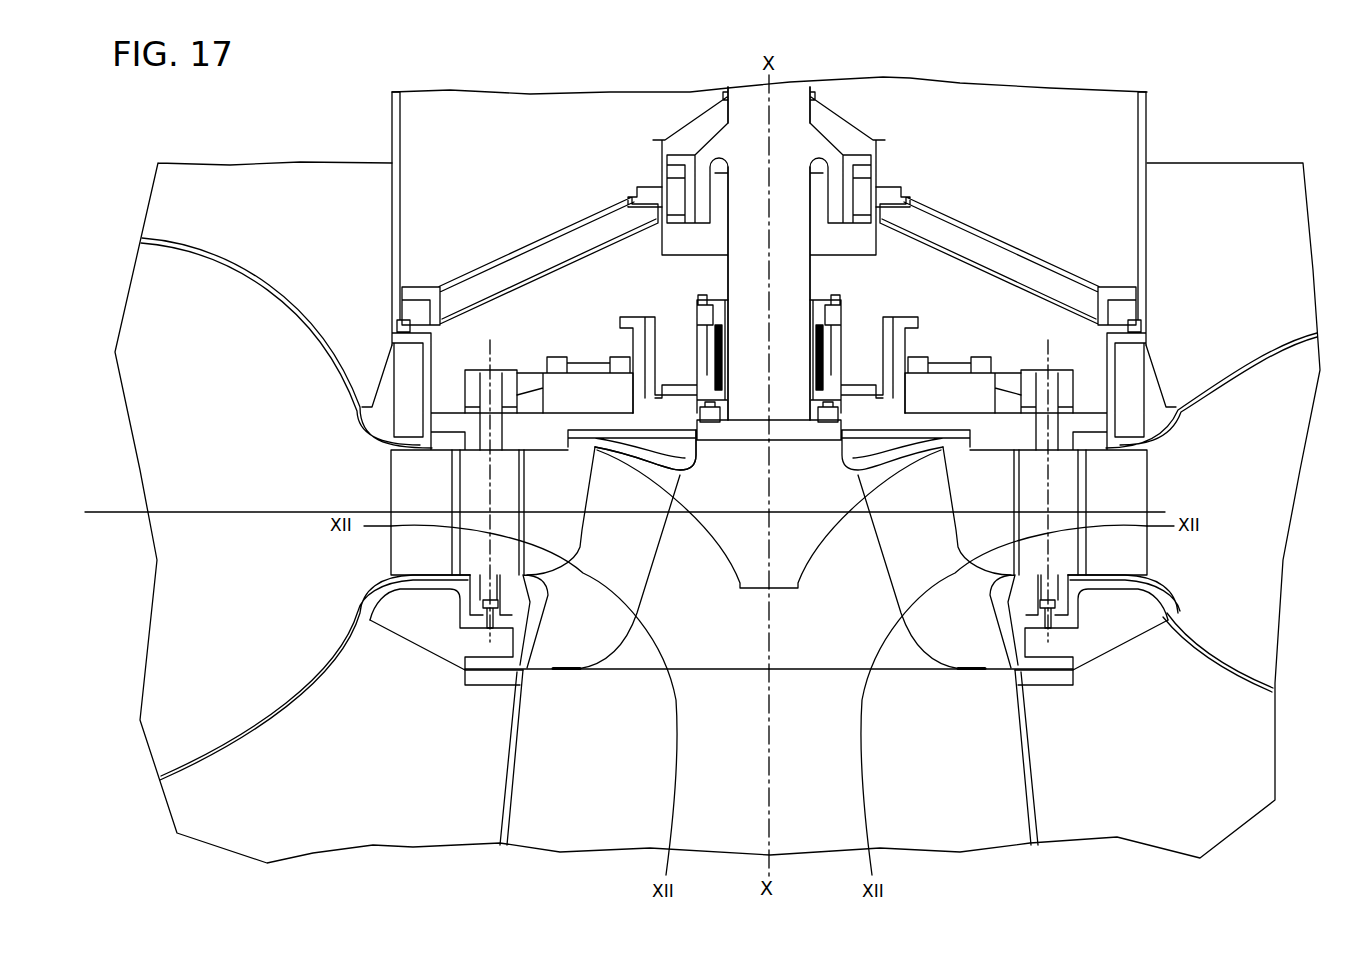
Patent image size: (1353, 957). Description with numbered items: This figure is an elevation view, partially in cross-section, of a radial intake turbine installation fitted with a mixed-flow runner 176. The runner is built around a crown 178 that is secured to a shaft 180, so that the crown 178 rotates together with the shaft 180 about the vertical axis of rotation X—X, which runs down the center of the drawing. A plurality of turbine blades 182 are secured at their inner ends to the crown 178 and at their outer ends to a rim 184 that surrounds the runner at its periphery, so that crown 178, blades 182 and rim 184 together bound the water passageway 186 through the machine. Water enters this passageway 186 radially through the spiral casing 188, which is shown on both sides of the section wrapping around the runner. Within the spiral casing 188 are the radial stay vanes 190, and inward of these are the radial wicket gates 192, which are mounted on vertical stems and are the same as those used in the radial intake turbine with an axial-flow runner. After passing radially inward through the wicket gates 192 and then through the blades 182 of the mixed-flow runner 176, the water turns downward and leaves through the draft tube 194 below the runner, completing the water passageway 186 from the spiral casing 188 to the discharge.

The mixed-flow runner 176 is at (724, 607).
The crown 178 is at (663, 478).
The shaft 180 is at (792, 190).
The turbine blades 182 is at (583, 530).
The rim 184 is at (547, 607).
The water passageway 186 is at (744, 719).
The spiral casing 188 is at (349, 491).
The radial stay vanes 190 is at (389, 547).
The radial wicket gates 192 is at (1021, 478).
The draft tube 194 is at (1017, 740).